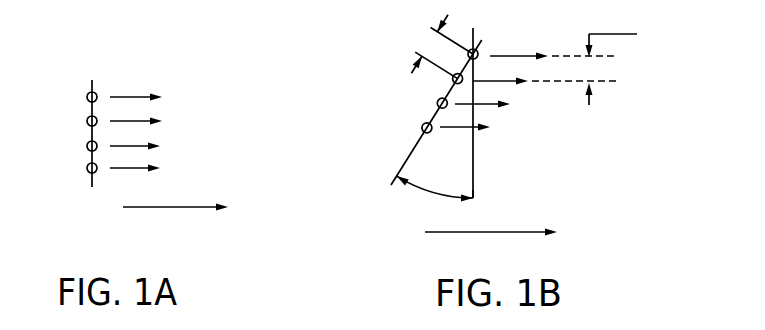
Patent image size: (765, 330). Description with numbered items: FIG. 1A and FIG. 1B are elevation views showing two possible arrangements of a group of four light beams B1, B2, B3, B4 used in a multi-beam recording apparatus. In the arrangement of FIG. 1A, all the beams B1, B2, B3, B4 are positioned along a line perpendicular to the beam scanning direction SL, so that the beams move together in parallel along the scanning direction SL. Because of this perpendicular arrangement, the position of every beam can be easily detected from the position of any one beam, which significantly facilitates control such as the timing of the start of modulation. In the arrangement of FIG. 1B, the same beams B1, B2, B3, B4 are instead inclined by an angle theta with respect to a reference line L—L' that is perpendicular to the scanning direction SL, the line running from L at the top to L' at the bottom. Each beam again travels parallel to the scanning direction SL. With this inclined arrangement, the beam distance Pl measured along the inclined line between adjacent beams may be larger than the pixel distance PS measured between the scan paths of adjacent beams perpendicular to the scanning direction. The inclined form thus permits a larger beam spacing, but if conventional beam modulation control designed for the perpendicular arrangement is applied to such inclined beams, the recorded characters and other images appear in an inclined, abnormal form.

In FIG. 1A, the beam B1 is at (86, 95).
In FIG. 1B, the beam B1 is at (479, 52).
In FIG. 1A, the beam B2 is at (86, 120).
In FIG. 1B, the beam B2 is at (452, 82).
In FIG. 1A, the beam B3 is at (86, 146).
In FIG. 1B, the beam B3 is at (437, 105).
In FIG. 1A, the beam B4 is at (87, 170).
In FIG. 1B, the beam B4 is at (431, 133).
In FIG. 1A, the beam scanning direction SL is at (175, 221).
In FIG. 1B, the beam scanning direction SL is at (491, 245).
In FIG. 1B, the line perpendicular to the scanning direction L is at (471, 103).
In FIG. 1B, the line perpendicular to the scanning direction L' is at (473, 209).
In FIG. 1B, the beam distance Pl is at (437, 47).
In FIG. 1B, the pixel distance PS is at (612, 57).